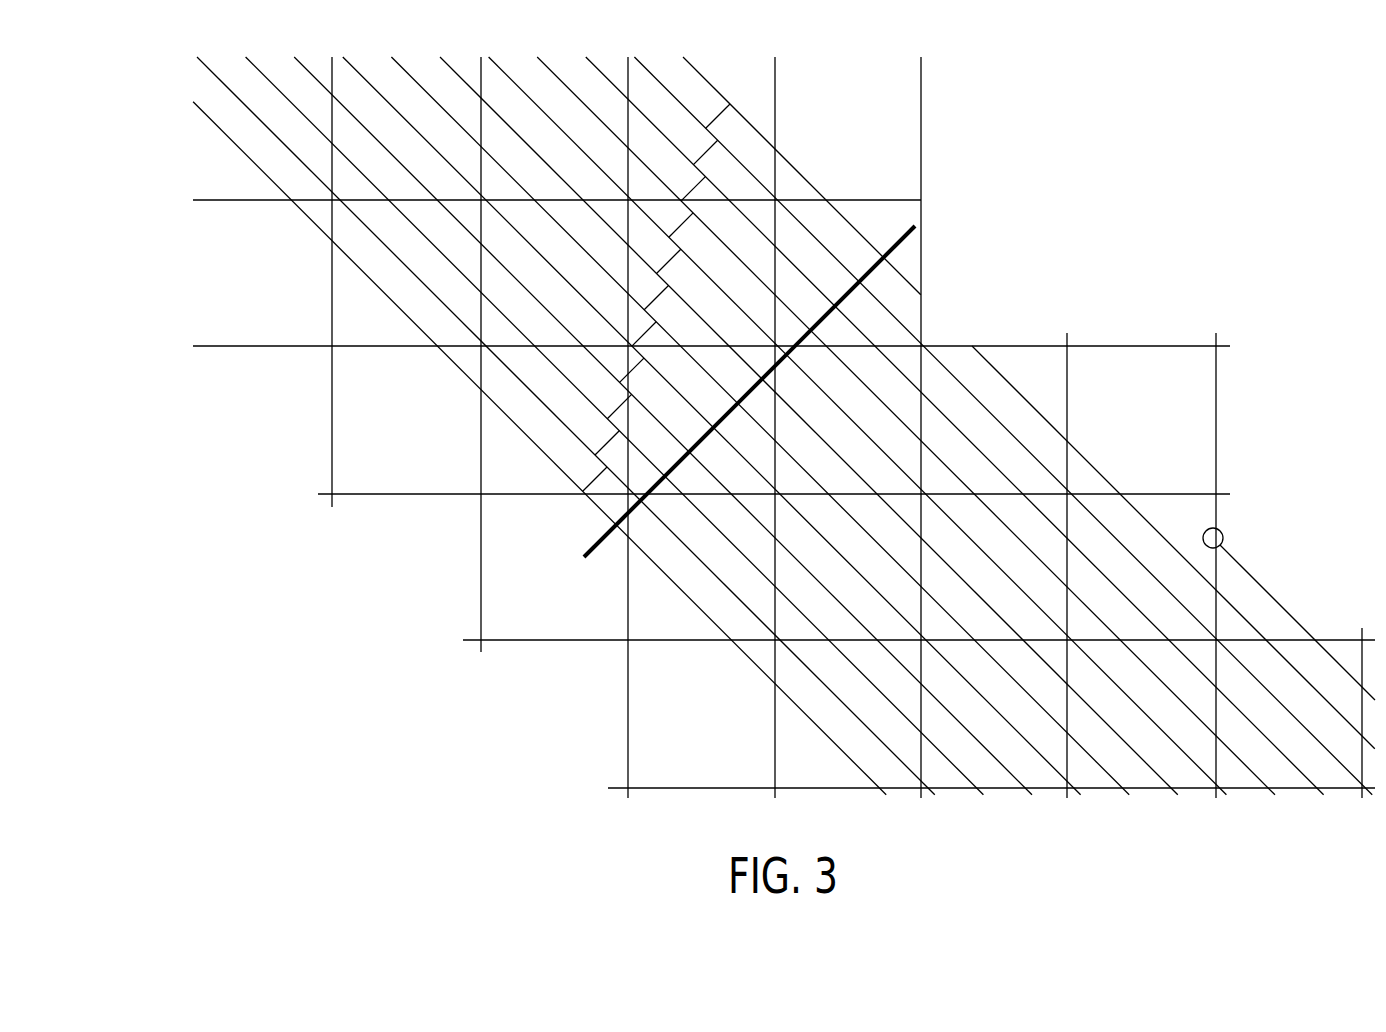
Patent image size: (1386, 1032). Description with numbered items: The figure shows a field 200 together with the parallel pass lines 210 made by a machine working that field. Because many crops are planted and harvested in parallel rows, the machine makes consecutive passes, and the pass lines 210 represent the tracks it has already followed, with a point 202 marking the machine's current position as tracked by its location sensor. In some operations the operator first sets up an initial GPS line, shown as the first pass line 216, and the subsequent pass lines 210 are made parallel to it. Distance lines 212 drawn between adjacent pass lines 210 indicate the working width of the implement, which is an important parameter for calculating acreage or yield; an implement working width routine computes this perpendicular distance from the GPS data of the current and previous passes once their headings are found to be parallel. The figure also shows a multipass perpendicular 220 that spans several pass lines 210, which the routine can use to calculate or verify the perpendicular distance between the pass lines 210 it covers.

The field 200 is at (1004, 136).
The point 202 is at (1223, 537).
The parallel pass lines 210 is at (955, 372).
The distance lines 212 is at (707, 150).
The first pass line 216 is at (457, 368).
The multipass perpendicular 220 is at (908, 237).